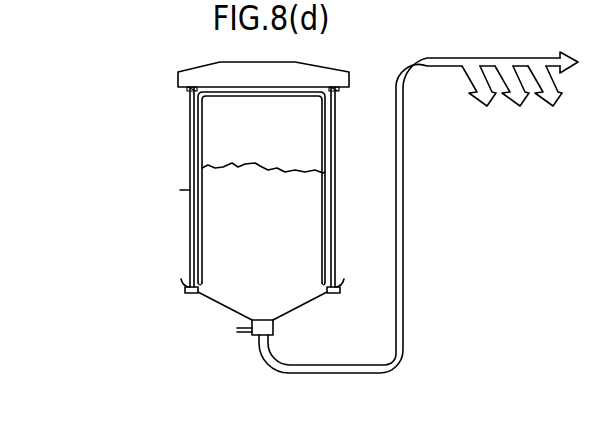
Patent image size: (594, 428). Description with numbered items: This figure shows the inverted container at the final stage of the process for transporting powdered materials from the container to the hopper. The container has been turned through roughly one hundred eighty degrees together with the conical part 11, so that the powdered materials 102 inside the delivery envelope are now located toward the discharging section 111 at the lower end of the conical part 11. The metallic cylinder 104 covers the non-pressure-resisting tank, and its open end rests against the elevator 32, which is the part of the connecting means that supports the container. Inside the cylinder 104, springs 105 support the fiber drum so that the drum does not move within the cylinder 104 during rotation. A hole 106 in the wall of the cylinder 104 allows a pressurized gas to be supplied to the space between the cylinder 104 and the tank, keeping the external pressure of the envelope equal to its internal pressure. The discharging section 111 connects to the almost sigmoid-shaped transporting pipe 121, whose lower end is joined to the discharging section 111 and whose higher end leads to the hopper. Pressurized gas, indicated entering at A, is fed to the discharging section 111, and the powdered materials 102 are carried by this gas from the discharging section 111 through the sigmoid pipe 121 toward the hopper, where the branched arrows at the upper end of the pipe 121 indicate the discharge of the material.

The elevator 32 is at (327, 77).
The springs 105 is at (335, 208).
The metallic cylinder 104 is at (192, 150).
The powdered materials 102 is at (235, 163).
The hole 106 is at (189, 186).
The conical part 11 is at (295, 311).
The discharging section 111 is at (252, 333).
The gas inlet A is at (234, 330).
The sigmoid pipe 121 is at (404, 295).